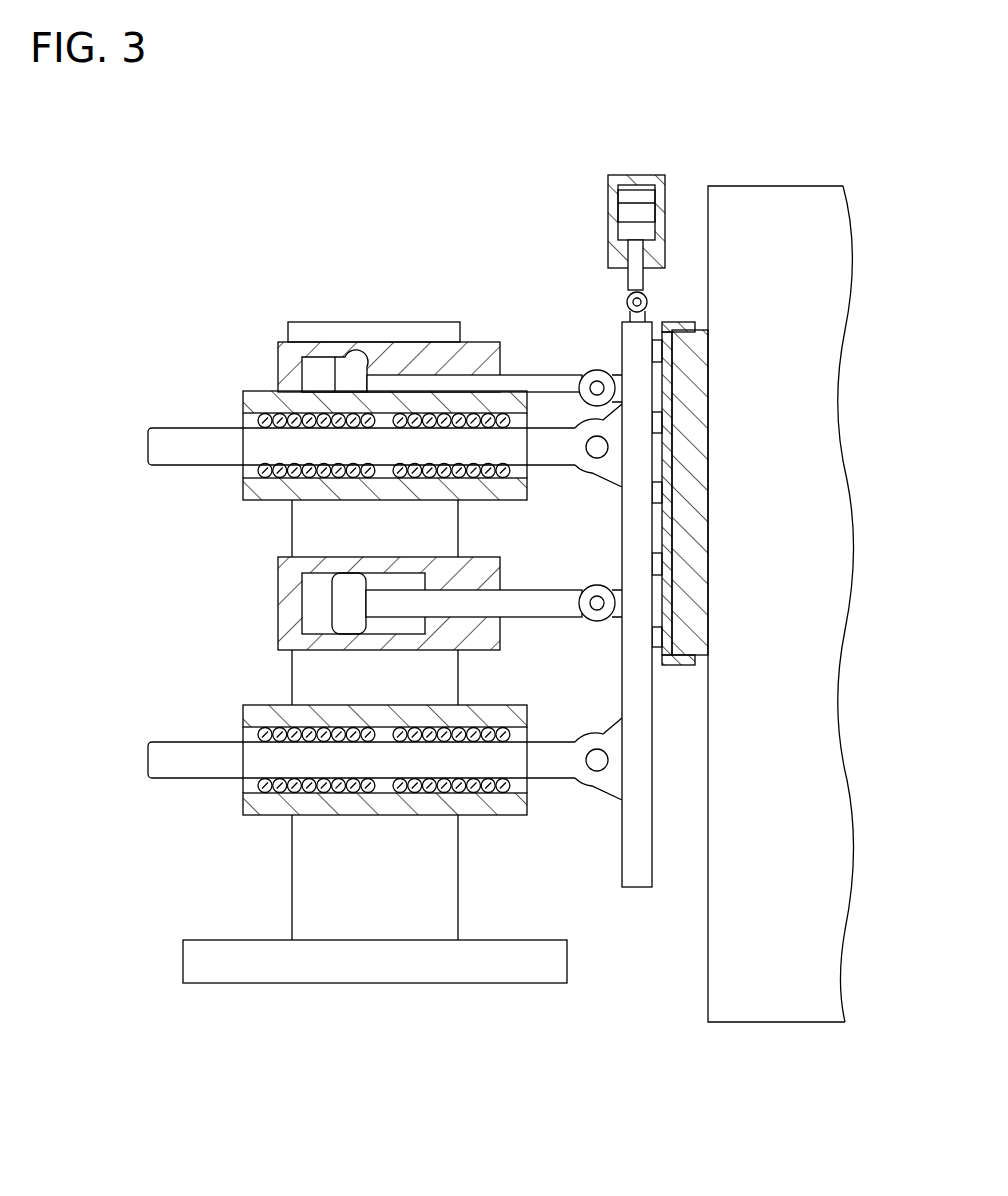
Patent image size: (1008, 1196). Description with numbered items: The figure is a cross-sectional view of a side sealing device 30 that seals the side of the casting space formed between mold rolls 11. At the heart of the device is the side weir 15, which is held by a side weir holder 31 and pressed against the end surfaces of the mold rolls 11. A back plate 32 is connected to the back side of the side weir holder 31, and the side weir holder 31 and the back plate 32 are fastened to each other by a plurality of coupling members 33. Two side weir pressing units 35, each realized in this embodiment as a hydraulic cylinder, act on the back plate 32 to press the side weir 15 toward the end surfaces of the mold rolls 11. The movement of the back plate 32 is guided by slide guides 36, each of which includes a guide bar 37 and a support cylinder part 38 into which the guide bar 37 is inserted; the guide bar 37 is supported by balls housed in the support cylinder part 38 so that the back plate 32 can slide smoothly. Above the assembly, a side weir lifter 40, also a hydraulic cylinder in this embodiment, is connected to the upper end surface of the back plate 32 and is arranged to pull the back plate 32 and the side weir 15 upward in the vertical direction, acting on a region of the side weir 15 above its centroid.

The mold roll 11 is at (778, 213).
The side weir 15 is at (700, 420).
The side sealing device 30 is at (170, 226).
The side weir holder 31 is at (680, 665).
The back plate 32 is at (653, 855).
The coupling member 33 is at (657, 648).
The side weir pressing unit 35 is at (280, 372).
The slide guide 36 is at (150, 490).
The guide bar 37 is at (190, 440).
The support cylinder part 38 is at (262, 497).
The side weir lifter 40 is at (588, 198).